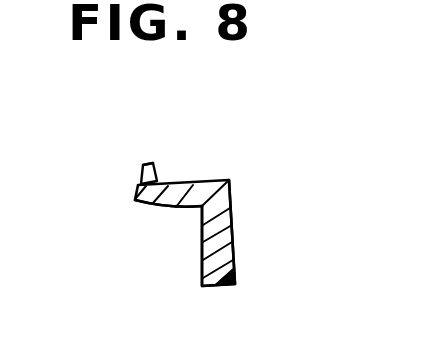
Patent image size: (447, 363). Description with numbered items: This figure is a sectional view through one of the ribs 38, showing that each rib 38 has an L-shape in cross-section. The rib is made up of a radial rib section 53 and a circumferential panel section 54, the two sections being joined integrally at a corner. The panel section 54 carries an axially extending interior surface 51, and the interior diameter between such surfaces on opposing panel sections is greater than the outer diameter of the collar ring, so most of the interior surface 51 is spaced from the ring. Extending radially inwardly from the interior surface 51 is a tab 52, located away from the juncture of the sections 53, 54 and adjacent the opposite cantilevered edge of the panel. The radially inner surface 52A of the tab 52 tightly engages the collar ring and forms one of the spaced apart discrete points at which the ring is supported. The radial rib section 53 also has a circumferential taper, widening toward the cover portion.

The rib 38 is at (172, 247).
The interior surface 51 is at (185, 184).
The tab 52 is at (141, 172).
The radially inner surface of tab 52A is at (153, 163).
The radial rib section 53 is at (236, 271).
The panel section 54 is at (152, 202).